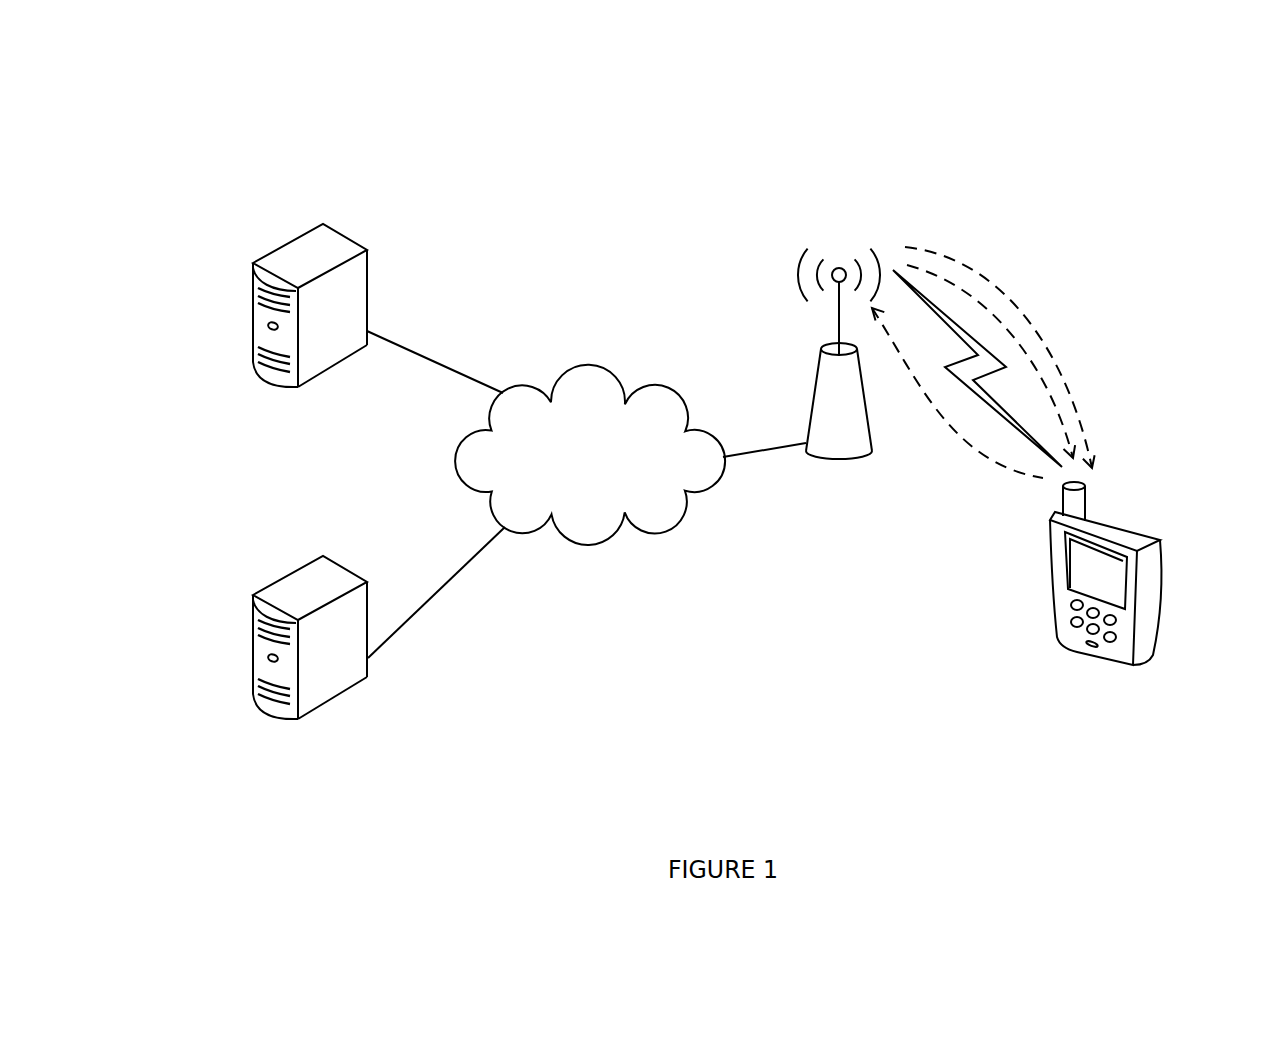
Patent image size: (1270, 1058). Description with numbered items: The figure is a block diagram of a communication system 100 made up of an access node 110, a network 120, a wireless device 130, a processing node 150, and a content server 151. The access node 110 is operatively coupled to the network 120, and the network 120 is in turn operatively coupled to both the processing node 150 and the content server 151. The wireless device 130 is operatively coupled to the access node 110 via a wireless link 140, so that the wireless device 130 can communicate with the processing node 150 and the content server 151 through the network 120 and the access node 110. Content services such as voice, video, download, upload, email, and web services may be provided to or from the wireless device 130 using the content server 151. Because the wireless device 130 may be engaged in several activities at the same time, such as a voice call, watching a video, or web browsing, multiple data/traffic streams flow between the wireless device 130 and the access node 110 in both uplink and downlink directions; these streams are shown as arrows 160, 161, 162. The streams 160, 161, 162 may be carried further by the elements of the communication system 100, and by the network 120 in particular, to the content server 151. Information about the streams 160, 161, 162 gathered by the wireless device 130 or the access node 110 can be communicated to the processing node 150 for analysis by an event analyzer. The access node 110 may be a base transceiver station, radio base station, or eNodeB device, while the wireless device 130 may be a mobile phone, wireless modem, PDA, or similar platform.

The communication system 100 is at (233, 80).
The access node 110 is at (852, 460).
The network 120 is at (572, 486).
The wireless device 130 is at (1147, 655).
The wireless link 140 is at (931, 302).
The processing node 150 is at (324, 698).
The content server 151 is at (324, 366).
The data/traffic stream 160 is at (1058, 423).
The data/traffic stream 161 is at (1087, 440).
The data/traffic stream 162 is at (1030, 478).